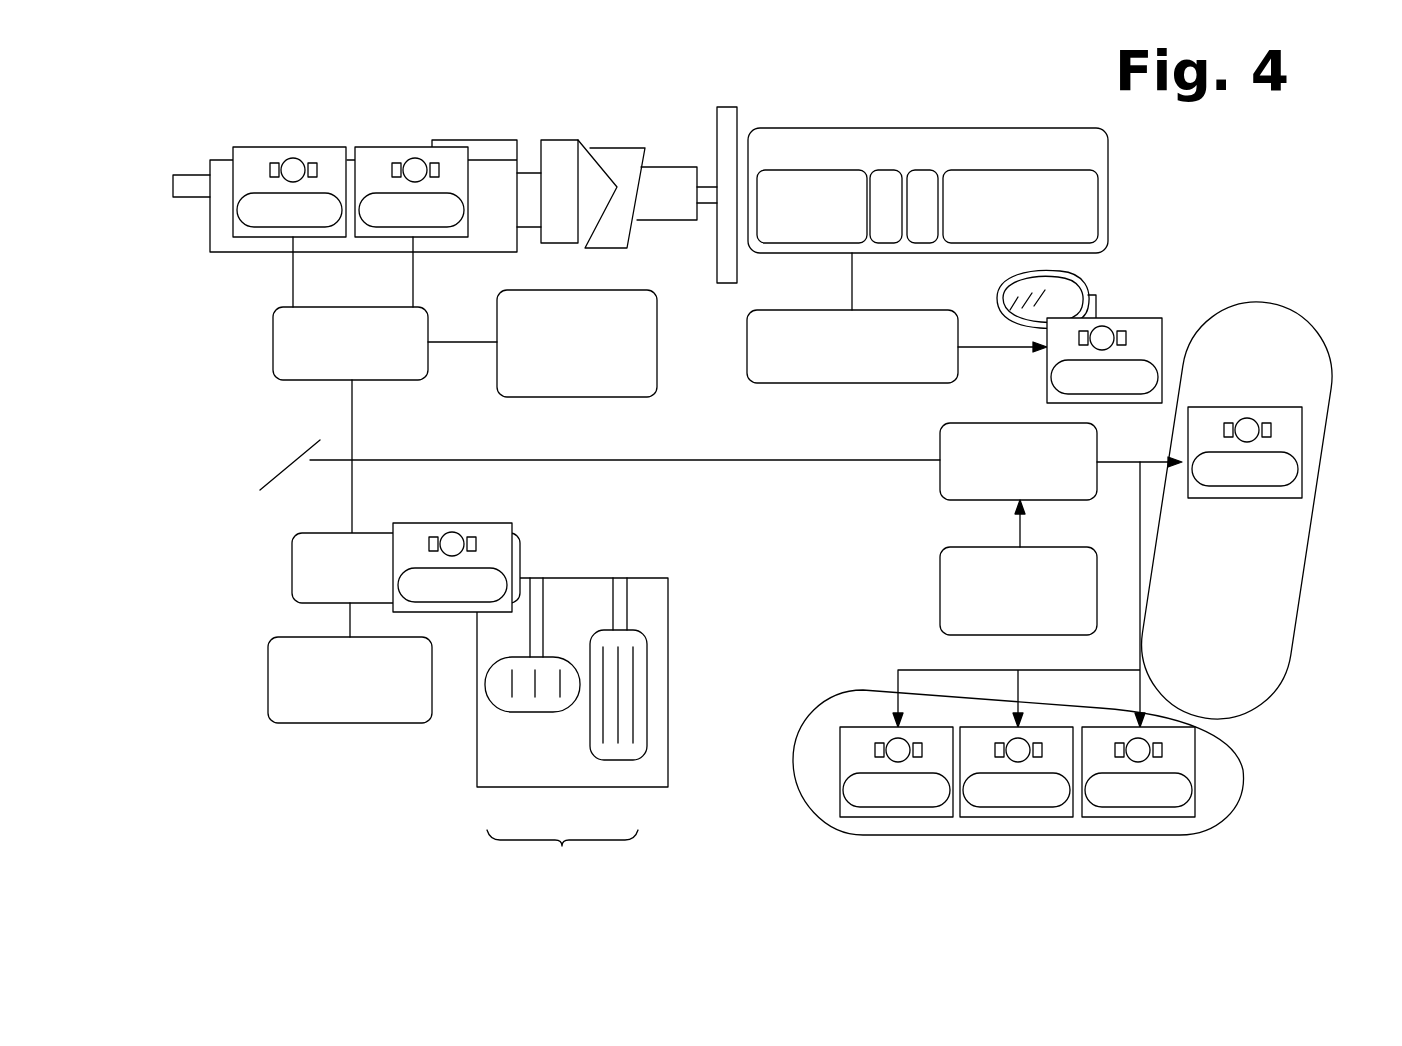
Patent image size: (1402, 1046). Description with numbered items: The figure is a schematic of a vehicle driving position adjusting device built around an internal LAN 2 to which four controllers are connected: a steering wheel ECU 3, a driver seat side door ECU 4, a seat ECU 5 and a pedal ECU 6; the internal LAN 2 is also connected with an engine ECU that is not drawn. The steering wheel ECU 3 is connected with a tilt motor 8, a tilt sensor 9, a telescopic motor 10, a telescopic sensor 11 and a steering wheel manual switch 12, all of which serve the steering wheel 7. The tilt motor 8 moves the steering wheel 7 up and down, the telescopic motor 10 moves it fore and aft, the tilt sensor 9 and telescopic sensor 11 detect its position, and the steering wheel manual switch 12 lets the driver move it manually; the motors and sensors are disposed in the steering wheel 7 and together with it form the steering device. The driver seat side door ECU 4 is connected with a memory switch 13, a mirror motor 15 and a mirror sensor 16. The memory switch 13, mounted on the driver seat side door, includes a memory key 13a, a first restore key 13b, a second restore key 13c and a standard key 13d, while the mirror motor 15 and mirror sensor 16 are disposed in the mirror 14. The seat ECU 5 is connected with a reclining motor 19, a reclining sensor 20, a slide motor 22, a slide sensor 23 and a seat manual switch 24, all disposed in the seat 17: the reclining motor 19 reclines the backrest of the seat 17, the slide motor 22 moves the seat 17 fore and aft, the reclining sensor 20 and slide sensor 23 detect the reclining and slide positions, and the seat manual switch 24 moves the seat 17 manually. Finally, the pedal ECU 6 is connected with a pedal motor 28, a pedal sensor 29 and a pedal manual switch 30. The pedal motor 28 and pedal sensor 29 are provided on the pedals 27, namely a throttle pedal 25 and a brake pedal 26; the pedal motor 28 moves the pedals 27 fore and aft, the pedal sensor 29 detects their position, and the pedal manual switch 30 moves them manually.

The internal LAN 2 is at (538, 460).
The steering wheel ECU 3 is at (273, 334).
The driver seat side door ECU 4 is at (747, 362).
The seat ECU 5 is at (940, 485).
The pedal ECU 6 is at (370, 533).
The steering wheel 7 is at (717, 120).
The tilt motor 8 is at (289, 158).
The tilt sensor 9 is at (258, 230).
The telescopic motor 10 is at (410, 158).
The telescopic sensor 11 is at (424, 226).
The steering wheel manual switch 12 is at (497, 377).
The memory switch 13 is at (970, 185).
The memory key 13a is at (775, 170).
The first restore key 13b is at (888, 243).
The second restore key 13c is at (925, 243).
The standard key 13d is at (1090, 168).
The mirror 14 is at (1090, 273).
The mirror motor 15 is at (1113, 330).
The mirror sensor 16 is at (1143, 358).
The seat 17 is at (1227, 687).
The reclining motor 19 is at (1273, 430).
The reclining sensor 20 is at (1267, 488).
The slide motor 22 is at (890, 737).
The slide sensor 23 is at (900, 807).
The seat manual switch 24 is at (940, 577).
The throttle pedal 25 is at (622, 760).
The brake pedal 26 is at (533, 712).
The pedals 27 is at (572, 728).
The pedal motor 28 is at (463, 533).
The pedal sensor 29 is at (497, 570).
The pedal manual switch 30 is at (350, 723).